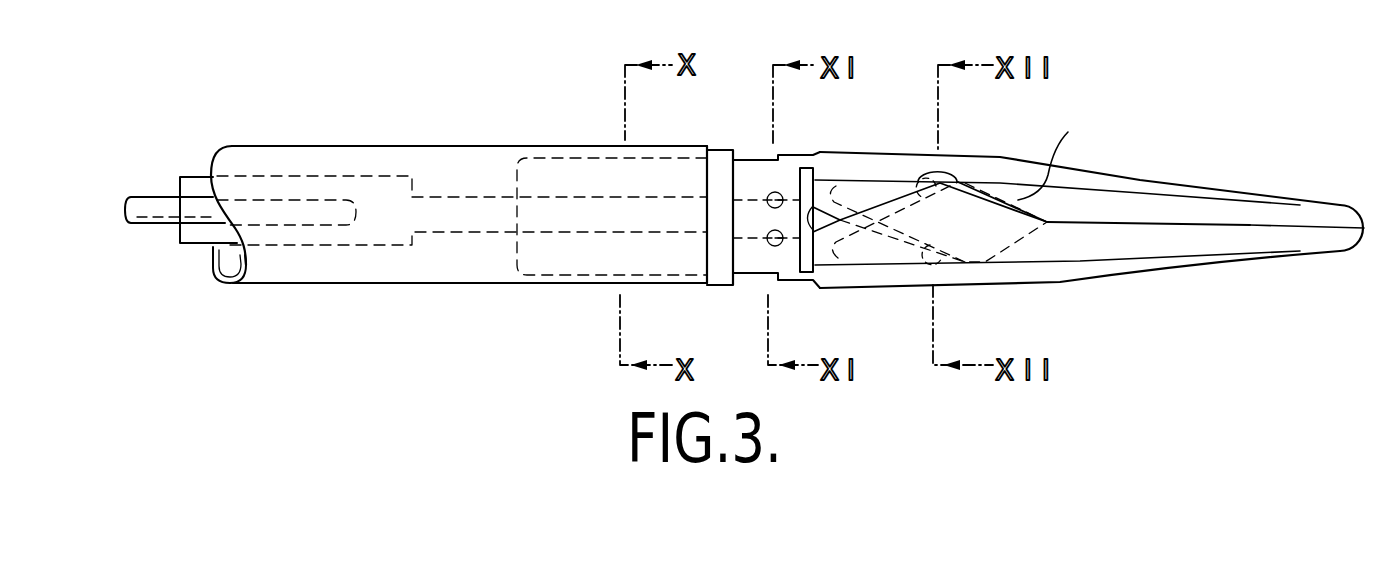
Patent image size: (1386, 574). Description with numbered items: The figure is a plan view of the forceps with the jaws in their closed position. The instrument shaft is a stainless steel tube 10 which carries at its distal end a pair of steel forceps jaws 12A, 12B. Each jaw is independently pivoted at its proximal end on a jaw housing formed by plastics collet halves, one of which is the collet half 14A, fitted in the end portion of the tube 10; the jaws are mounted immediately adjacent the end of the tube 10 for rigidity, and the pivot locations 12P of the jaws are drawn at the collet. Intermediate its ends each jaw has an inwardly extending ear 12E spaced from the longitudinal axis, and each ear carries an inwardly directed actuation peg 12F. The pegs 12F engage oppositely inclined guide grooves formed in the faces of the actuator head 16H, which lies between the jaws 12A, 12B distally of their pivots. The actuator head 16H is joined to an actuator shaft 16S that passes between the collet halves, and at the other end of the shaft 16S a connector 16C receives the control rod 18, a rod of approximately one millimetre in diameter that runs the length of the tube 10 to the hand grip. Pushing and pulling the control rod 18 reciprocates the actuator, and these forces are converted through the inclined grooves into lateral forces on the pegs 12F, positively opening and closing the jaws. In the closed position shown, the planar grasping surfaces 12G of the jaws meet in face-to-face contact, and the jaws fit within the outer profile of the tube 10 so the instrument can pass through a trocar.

The tube 10 is at (458, 146).
The forceps jaw 12A is at (1143, 177).
The forceps jaw 12B is at (1110, 277).
The ear 12E is at (1007, 237).
The actuation peg 12F is at (973, 170).
The grasping surfaces 12G is at (1252, 225).
The pivot pins 12P is at (783, 195).
The collet half 14A is at (752, 158).
The connector 16C is at (202, 232).
The actuator head 16H is at (1072, 151).
The actuator shaft 16S is at (477, 233).
The control rod 18 is at (163, 224).